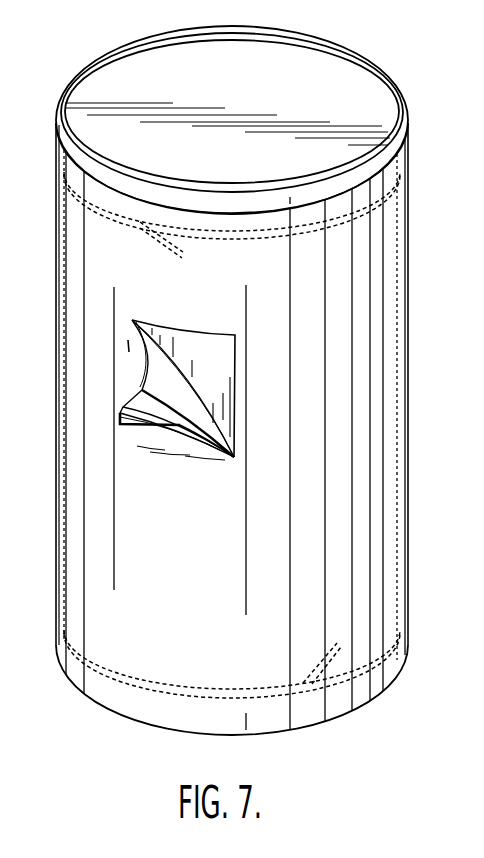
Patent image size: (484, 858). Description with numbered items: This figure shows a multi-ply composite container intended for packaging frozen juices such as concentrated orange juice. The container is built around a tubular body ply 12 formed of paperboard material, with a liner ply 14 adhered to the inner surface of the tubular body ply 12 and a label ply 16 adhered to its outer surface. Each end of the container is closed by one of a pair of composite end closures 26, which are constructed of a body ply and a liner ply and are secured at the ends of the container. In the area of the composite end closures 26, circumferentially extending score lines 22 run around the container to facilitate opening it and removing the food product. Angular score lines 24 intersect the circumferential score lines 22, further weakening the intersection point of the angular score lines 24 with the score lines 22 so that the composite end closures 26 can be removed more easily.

The tubular body ply 12 is at (160, 415).
The liner ply 14 is at (160, 388).
The label ply 16 is at (135, 427).
The circumferentially extending score lines 22 is at (235, 238).
The angular score lines 24 is at (157, 234).
The composite end closures 26 is at (157, 68).